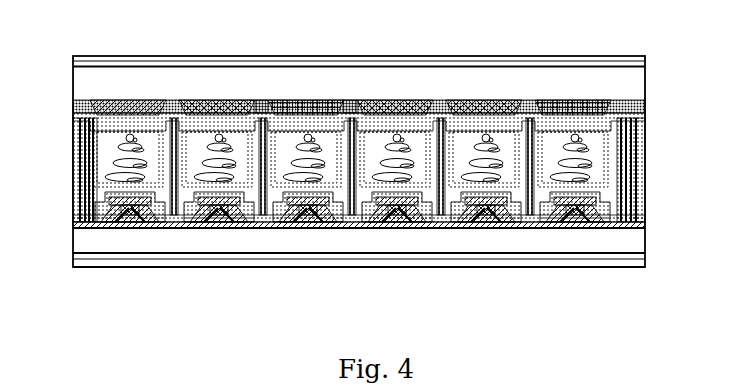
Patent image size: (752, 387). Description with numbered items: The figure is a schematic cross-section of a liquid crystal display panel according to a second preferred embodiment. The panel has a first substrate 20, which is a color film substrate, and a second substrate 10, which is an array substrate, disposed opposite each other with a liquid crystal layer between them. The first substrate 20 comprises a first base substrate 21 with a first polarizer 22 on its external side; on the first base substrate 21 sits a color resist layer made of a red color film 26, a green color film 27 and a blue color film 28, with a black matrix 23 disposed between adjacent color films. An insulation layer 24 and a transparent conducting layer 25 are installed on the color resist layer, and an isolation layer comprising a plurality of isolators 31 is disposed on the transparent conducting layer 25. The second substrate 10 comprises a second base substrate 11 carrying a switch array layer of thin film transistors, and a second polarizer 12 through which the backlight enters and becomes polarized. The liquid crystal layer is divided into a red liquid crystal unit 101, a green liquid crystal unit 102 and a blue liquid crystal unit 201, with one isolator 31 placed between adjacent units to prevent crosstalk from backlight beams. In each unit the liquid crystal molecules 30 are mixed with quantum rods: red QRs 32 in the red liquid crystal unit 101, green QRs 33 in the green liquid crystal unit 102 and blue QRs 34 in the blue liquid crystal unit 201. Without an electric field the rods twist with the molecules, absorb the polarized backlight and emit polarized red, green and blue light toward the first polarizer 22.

The second substrate 10 is at (684, 190).
The second base substrate 11 is at (647, 242).
The second polarizer 12 is at (653, 256).
The first substrate 20 is at (682, 55).
The first base substrate 21 is at (645, 66).
The first polarizer 22 is at (645, 57).
The black matrix 23 is at (350, 100).
The insulation layer 24 is at (642, 116).
The transparent conducting layer 25 is at (75, 119).
The red color film 26 is at (122, 110).
The green color film 27 is at (217, 110).
The blue color film 28 is at (298, 108).
The liquid crystal molecules 30 is at (122, 228).
The isolators 31 is at (533, 120).
The red QRs 32 is at (155, 228).
The green QRs 33 is at (217, 228).
The blue QRs 34 is at (317, 228).
The red liquid crystal unit 101 is at (78, 163).
The green liquid crystal unit 102 is at (248, 228).
The blue liquid crystal unit 201 is at (347, 228).